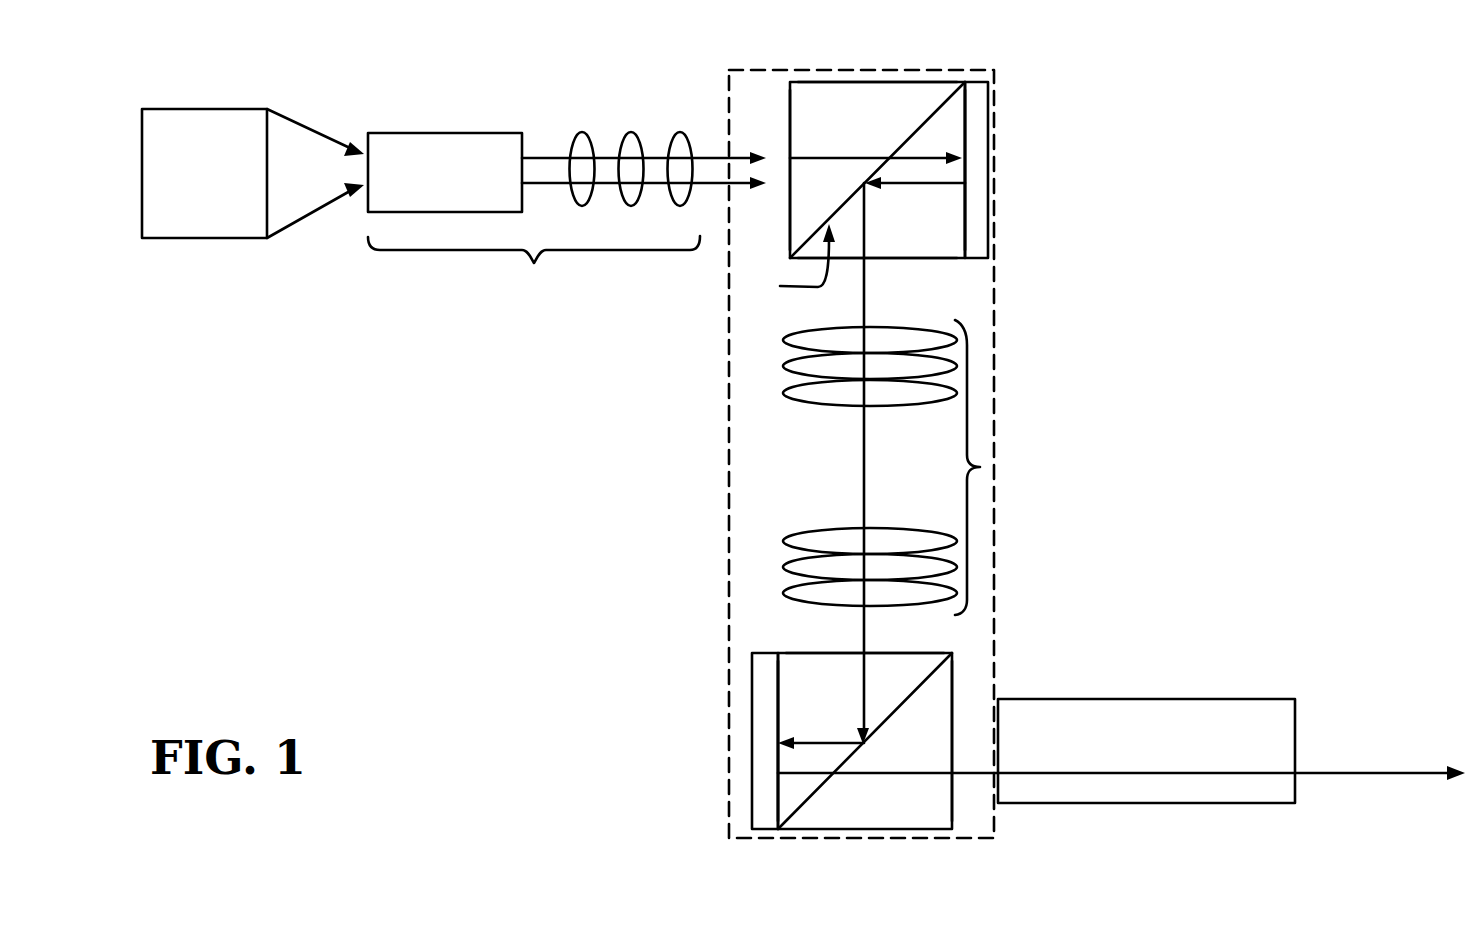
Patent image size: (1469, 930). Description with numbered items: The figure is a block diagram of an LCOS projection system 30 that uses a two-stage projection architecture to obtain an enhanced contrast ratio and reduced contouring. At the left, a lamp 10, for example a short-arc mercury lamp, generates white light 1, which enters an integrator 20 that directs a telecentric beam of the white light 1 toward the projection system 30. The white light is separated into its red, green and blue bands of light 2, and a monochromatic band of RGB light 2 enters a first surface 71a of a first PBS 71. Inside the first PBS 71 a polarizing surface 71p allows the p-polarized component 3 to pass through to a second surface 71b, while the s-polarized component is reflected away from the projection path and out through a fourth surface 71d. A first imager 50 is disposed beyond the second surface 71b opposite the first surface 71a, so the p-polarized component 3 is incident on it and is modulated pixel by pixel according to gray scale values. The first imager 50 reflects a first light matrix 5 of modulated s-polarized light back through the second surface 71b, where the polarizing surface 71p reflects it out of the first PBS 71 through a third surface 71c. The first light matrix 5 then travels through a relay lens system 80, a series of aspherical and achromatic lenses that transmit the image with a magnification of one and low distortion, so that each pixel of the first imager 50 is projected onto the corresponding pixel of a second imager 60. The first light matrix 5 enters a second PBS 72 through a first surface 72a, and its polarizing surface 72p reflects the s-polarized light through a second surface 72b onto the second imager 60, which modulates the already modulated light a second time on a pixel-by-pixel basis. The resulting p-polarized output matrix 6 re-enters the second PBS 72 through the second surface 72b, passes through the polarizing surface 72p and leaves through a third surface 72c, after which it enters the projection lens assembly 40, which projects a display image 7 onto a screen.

The white light 1 is at (318, 130).
The RGB bands of light 2 is at (713, 157).
The p-polarized component 3 is at (920, 155).
The first light matrix 5 is at (866, 288).
The output matrix 6 is at (984, 775).
The display image 7 is at (1373, 770).
The lamp 10 is at (180, 109).
The integrator 20 is at (534, 216).
The projection system 30 is at (861, 454).
The projection lens assembly 40 is at (1220, 698).
The first imager 50 is at (990, 120).
The second imager 60 is at (752, 697).
The first PBS 71 is at (788, 80).
The first surface of first PBS 71a is at (787, 222).
The second surface of first PBS 71b is at (950, 226).
The third surface of first PBS 71c is at (842, 260).
The fourth surface of first PBS 71d is at (838, 82).
The polarizing surface of first PBS 71p is at (846, 193).
The second PBS 72 is at (953, 668).
The first surface of second PBS 72a is at (787, 652).
The second surface of second PBS 72b is at (783, 808).
The third surface of second PBS 72c is at (957, 817).
The polarizing surface of second PBS 72p is at (932, 663).
The relay lens system 80 is at (982, 467).